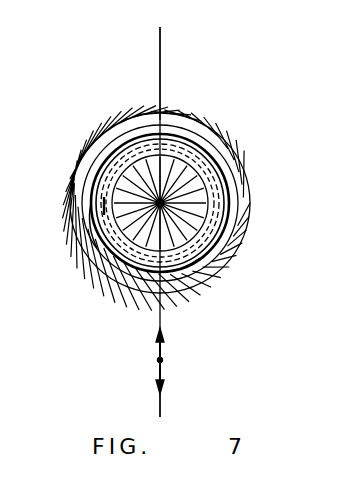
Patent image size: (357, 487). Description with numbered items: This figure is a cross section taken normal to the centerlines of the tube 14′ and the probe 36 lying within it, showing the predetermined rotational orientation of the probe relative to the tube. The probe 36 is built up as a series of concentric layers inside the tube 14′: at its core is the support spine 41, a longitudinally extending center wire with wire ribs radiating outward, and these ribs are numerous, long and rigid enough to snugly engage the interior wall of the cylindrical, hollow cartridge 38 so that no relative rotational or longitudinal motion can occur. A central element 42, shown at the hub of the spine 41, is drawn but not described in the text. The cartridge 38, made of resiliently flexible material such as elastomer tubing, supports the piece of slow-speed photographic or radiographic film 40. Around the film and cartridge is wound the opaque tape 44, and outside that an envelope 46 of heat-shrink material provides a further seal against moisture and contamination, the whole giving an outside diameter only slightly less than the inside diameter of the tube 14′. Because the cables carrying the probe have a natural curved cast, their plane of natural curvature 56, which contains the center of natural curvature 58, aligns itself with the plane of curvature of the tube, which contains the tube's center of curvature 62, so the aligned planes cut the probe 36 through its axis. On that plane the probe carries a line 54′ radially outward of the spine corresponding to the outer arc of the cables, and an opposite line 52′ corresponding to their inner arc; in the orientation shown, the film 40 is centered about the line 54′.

The tube 14′ is at (98, 135).
The probe 36 is at (219, 160).
The cartridge 38 is at (200, 150).
The film 40 is at (215, 172).
The support spine 41 is at (205, 210).
The hub with spokes 42 is at (175, 203).
The opaque tape 44 is at (112, 231).
The envelope 46 is at (97, 248).
The line 52′ is at (169, 268).
The line 54′ is at (163, 143).
The plane of natural curvature 56 is at (160, 48).
The center of natural curvature 58 is at (163, 360).
The center of curvature 62 is at (163, 406).